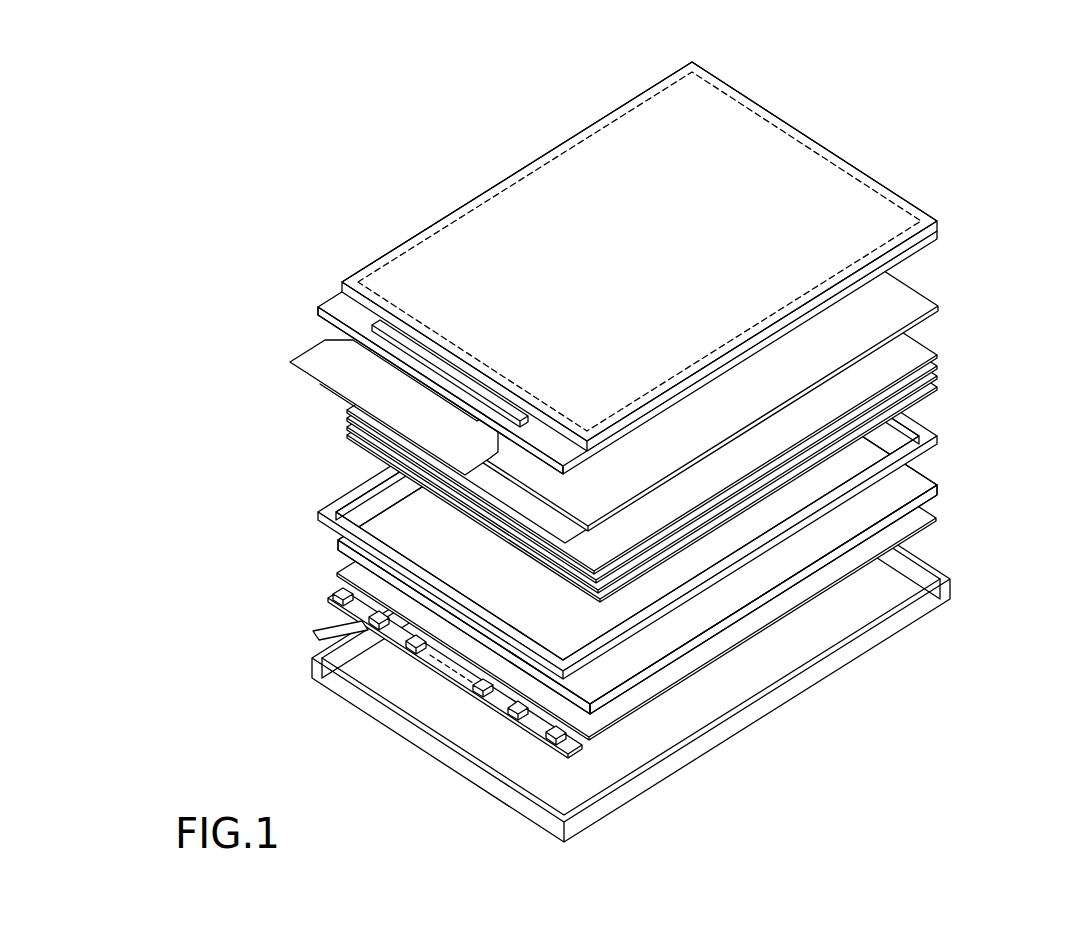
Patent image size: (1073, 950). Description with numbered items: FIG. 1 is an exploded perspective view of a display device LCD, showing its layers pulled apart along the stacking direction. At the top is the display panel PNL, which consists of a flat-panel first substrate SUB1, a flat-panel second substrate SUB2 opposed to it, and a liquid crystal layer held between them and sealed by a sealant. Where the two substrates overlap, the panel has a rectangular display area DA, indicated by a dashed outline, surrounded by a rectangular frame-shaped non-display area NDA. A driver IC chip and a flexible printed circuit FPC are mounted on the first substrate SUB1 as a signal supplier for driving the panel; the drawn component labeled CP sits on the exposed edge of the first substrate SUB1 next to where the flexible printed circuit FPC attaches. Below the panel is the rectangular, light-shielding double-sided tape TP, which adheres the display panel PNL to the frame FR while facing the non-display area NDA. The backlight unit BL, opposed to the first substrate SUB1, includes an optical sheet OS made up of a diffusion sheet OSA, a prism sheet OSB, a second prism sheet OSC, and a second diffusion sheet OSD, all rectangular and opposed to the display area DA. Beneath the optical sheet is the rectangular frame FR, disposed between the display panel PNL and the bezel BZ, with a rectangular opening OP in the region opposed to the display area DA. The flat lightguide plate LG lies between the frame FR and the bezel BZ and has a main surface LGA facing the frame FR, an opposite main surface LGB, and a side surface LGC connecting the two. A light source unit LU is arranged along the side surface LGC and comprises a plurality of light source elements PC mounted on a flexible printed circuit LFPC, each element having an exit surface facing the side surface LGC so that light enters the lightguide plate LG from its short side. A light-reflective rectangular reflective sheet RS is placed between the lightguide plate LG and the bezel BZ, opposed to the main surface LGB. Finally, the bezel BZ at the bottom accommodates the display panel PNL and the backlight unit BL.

The display device LCD is at (348, 158).
The display panel PNL is at (655, 264).
The first substrate SUB1 is at (937, 236).
The second substrate SUB2 is at (937, 222).
The display area DA is at (787, 124).
The non-display area NDA is at (760, 103).
The driver IC / circuit component CP is at (333, 298).
The flexible printed circuit FPC is at (310, 356).
The double-sided tape TP is at (937, 308).
The optical sheet OS is at (701, 398).
The diffusion sheet OSA is at (937, 355).
The prism sheet OSB is at (937, 366).
The prism sheet OSC is at (937, 376).
The diffusion sheet OSD is at (937, 387).
The backlight unit BL is at (665, 520).
The frame FR is at (657, 477).
The opening OP is at (898, 438).
The lightguide plate LG is at (667, 534).
The main surface LGA is at (848, 513).
The main surface LGB is at (767, 600).
The side surface LGC is at (570, 703).
The reflective sheet RS is at (937, 518).
The light source unit LU is at (484, 717).
The flexible printed circuit LFPC is at (447, 692).
The light source element PC is at (575, 752).
The bezel BZ is at (950, 581).